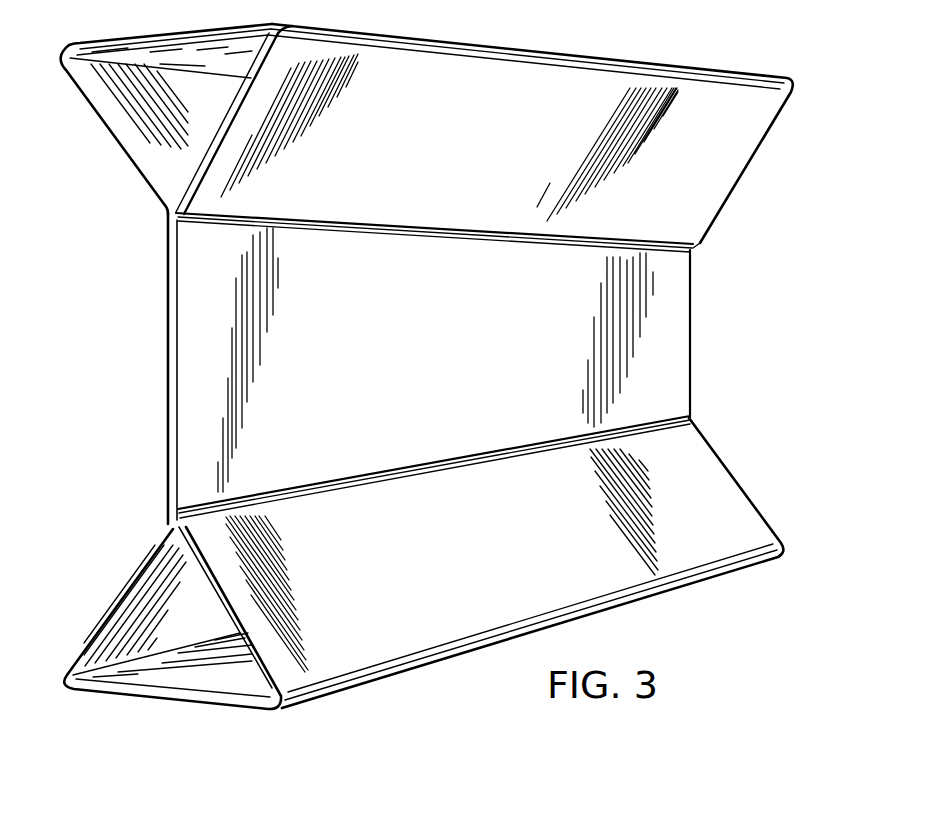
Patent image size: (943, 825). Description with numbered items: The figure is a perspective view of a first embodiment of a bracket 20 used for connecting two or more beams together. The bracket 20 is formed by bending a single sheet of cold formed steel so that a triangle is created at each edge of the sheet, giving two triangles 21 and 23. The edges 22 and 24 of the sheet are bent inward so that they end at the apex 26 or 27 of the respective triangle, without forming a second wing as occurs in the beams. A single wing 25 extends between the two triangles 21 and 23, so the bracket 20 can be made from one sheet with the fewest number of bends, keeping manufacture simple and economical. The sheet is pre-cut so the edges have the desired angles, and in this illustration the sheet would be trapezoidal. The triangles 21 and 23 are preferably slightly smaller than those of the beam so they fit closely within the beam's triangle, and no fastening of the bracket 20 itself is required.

The bracket 20 is at (145, 338).
The triangle 21 is at (545, 77).
The edge 22 is at (282, 223).
The triangle 23 is at (723, 482).
The edge 24 is at (278, 497).
The wing 25 is at (675, 336).
The apex 26 is at (158, 212).
The apex 27 is at (170, 527).